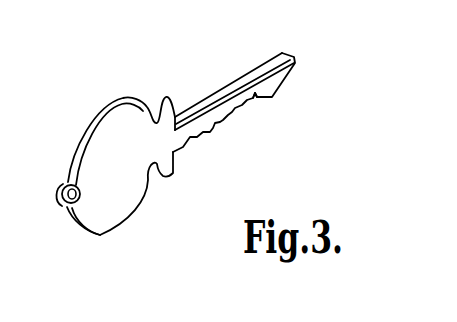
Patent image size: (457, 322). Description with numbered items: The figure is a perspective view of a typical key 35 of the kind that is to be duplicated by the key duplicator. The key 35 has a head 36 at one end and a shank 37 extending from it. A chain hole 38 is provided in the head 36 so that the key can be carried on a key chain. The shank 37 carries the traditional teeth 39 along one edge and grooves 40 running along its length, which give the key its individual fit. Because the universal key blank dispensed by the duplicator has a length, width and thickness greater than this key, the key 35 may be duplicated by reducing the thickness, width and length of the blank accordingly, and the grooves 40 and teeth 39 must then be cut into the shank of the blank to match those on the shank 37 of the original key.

The key 35 is at (322, 116).
The head 36 is at (125, 200).
The shank 37 is at (253, 64).
The chain hole 38 is at (70, 191).
The teeth 39 is at (217, 117).
The grooves 40 is at (232, 98).